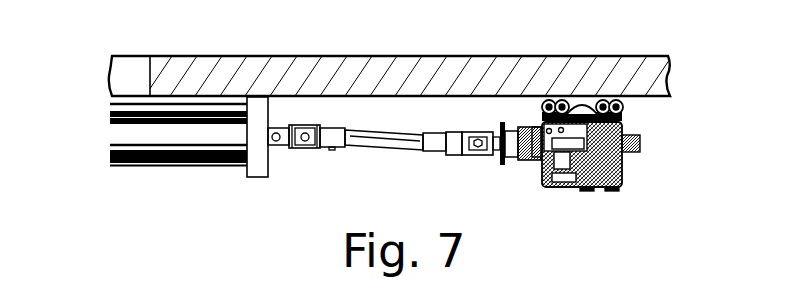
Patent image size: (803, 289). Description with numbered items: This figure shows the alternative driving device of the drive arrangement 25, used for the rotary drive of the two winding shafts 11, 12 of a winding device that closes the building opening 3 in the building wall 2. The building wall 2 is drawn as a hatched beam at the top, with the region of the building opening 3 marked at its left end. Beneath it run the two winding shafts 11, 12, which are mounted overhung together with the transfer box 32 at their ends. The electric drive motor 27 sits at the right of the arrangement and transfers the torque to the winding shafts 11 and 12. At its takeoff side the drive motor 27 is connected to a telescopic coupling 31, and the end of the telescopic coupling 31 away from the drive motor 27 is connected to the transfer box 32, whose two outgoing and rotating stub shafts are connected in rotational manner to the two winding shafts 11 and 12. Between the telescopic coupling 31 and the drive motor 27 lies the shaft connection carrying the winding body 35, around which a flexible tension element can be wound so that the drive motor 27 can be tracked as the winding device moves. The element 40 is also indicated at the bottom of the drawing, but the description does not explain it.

The building wall 2 is at (538, 67).
The building opening 3 is at (122, 90).
The winding shaft 12 is at (112, 121).
The winding shaft 11 is at (207, 164).
The transfer box 32 is at (256, 178).
The telescopic coupling 31 is at (375, 155).
The drive arrangement 25 is at (496, 170).
The lower winding body 35 is at (512, 128).
The electric drive motor 27 is at (555, 192).
The actuator assembly 40 is at (572, 284).